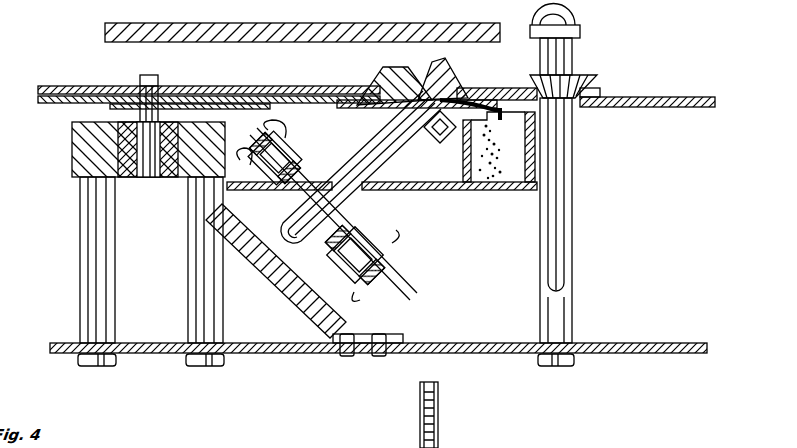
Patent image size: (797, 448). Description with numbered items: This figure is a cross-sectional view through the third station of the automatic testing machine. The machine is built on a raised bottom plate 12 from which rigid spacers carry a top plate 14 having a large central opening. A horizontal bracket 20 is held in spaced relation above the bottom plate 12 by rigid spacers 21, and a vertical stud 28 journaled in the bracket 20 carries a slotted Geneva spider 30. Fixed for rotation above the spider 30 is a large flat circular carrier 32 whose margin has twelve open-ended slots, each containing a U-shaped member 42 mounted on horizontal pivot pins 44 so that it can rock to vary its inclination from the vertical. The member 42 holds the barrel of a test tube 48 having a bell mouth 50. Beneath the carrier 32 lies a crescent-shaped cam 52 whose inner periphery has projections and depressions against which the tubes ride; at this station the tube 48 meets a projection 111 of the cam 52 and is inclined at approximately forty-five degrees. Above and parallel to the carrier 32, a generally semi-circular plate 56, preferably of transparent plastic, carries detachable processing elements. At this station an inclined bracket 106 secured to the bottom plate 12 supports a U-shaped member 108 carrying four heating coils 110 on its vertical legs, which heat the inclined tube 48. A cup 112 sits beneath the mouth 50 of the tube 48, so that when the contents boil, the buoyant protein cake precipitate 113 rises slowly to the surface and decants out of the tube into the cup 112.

The bottom plate 12 is at (498, 343).
The top plate 14 is at (650, 97).
The horizontal bracket 20 is at (72, 152).
The rigid spacers 21 is at (188, 248).
The vertical stud 28 is at (150, 177).
The Geneva spider 30 is at (245, 109).
The carrier 32 is at (331, 88).
The U-shaped member 42 is at (385, 68).
The horizontal pivot pins 44 is at (395, 120).
The test tube 48 is at (573, 268).
The bell mouth 50 is at (440, 75).
The cam 52 is at (465, 190).
The semi-circular plate 56 is at (292, 38).
The inclined bracket 106 is at (318, 328).
The U-shaped member 108 is at (362, 270).
The heating coils 110 is at (405, 233).
The projection 111 is at (363, 188).
The cup 112 is at (482, 186).
The protein cake precipitate 113 is at (494, 145).